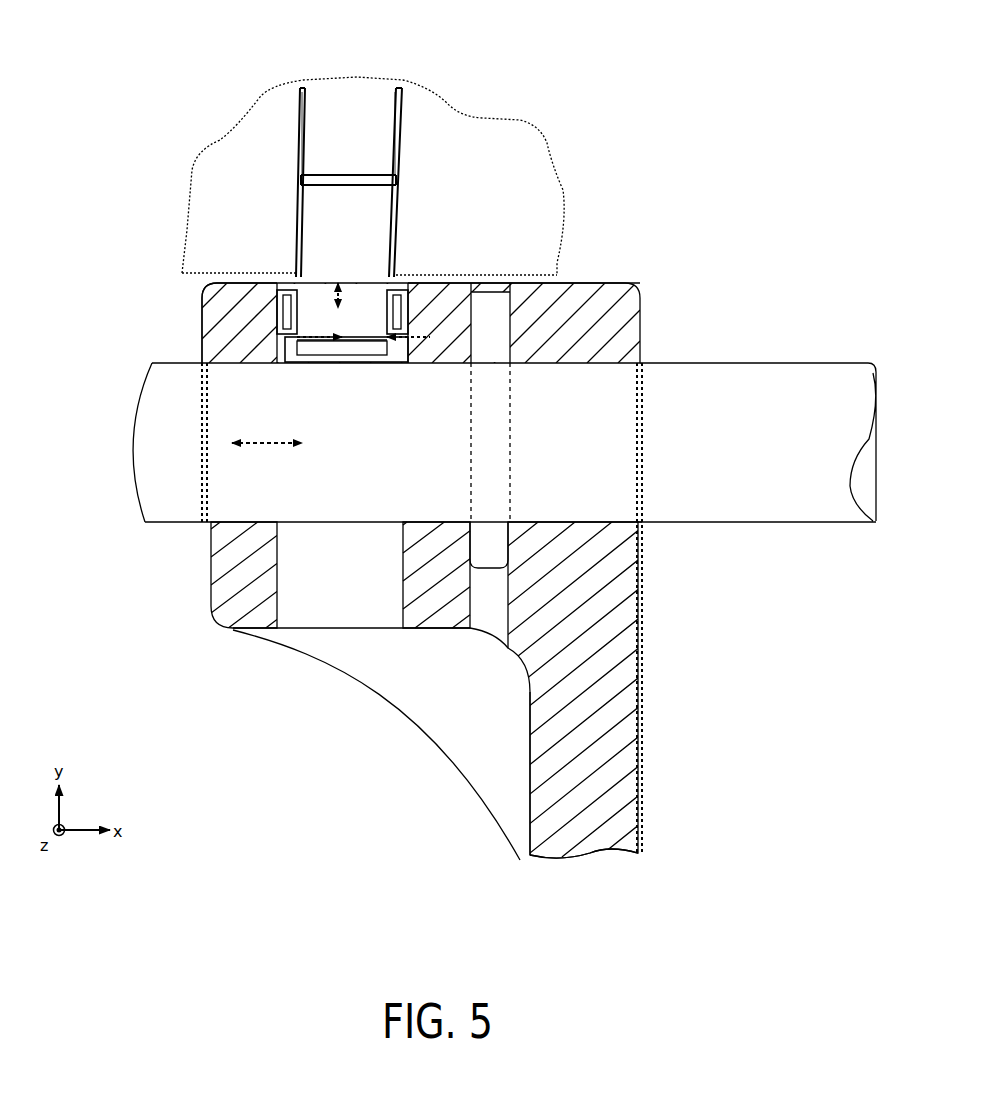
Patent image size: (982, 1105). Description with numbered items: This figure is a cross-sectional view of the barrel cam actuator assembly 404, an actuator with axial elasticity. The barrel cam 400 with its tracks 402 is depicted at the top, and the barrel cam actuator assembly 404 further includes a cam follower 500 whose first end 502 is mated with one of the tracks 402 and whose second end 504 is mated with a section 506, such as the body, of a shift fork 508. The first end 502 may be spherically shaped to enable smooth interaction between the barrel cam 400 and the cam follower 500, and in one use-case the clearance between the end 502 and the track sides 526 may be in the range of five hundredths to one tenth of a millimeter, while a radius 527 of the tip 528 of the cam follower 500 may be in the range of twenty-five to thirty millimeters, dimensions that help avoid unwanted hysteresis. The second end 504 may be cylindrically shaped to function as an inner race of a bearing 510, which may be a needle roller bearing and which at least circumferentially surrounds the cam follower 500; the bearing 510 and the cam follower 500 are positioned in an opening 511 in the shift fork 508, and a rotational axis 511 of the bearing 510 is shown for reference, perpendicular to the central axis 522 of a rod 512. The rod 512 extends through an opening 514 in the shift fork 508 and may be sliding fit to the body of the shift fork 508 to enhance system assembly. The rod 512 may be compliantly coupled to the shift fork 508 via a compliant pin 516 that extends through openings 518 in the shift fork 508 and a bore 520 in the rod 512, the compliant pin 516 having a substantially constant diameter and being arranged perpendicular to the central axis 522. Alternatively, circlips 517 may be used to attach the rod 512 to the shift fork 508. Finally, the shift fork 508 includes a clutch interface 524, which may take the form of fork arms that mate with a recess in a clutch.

The barrel cam 400 is at (515, 202).
The tracks 402 is at (352, 124).
The barrel cam actuator assembly 404 is at (813, 122).
The cam follower 500 is at (340, 322).
The first end 502 is at (323, 178).
The second end 504 is at (326, 344).
The section 506 is at (227, 337).
The shift fork 508 is at (612, 712).
The bearing 510 is at (277, 309).
The opening / rotational axis 511 is at (278, 718).
The rod 512 is at (764, 418).
The opening 514 is at (637, 524).
The compliant pin 516 is at (497, 338).
The circlips 517 is at (202, 473).
The openings 518 is at (488, 618).
The bore 520 is at (471, 520).
The central axis 522 is at (280, 446).
The clutch interface 524 is at (652, 826).
The track sides 526 is at (310, 90).
The radius 527 is at (414, 343).
The tip 528 is at (371, 343).